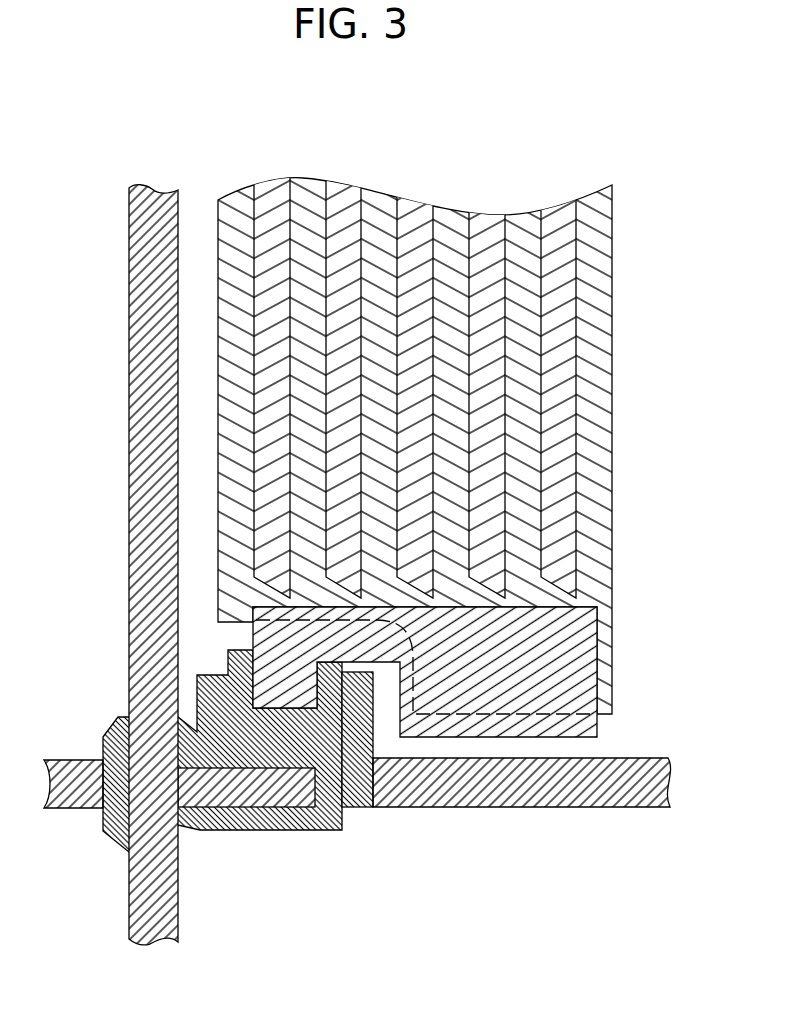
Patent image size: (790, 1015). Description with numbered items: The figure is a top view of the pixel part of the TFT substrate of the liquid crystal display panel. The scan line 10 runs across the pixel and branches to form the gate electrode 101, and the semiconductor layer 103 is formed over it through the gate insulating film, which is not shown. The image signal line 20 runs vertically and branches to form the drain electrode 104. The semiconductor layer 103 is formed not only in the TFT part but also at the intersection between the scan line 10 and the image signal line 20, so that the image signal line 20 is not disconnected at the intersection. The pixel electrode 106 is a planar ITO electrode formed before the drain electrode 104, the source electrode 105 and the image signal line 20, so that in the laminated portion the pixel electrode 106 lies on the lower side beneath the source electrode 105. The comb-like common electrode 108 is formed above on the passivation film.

The scan line 10 is at (570, 807).
The image signal line 20 is at (140, 412).
The gate electrode 101 is at (365, 725).
The semiconductor layer 103 is at (315, 818).
The drain electrode 104 is at (245, 797).
The source electrode 105 is at (596, 724).
The pixel electrode 106 is at (595, 496).
The common electrode 108 is at (563, 387).